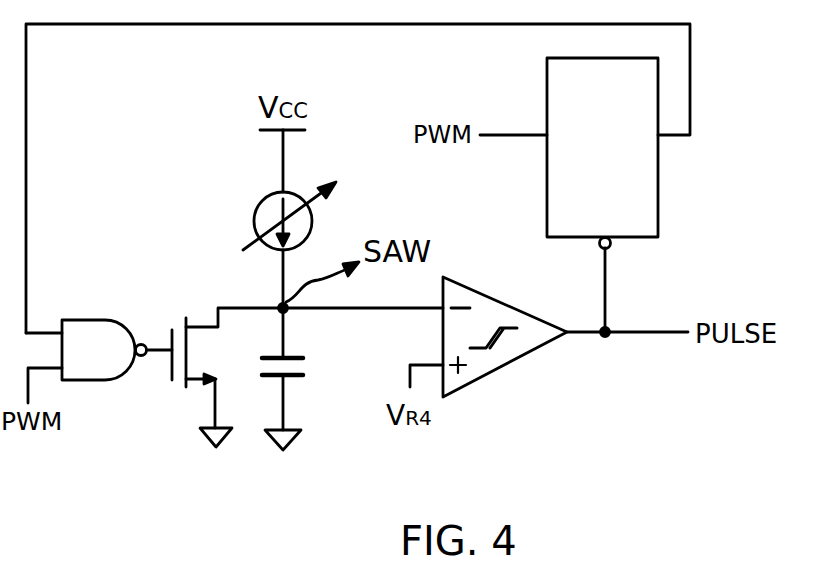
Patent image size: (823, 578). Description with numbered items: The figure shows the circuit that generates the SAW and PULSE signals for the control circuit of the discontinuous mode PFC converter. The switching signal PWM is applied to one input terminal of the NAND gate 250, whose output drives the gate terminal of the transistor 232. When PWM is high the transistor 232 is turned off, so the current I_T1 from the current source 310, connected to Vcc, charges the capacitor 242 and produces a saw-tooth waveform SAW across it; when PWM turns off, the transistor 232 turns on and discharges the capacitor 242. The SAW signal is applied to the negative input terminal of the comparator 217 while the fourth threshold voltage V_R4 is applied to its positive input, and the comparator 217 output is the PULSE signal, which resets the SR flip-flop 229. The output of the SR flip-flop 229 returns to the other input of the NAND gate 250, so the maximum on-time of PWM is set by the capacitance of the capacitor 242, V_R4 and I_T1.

The current source 310 is at (260, 199).
The NAND gate 250 is at (85, 309).
The transistor 232 is at (174, 387).
The capacitor 242 is at (308, 364).
The comparator 217 is at (500, 378).
The SR flip-flop 229 is at (659, 196).